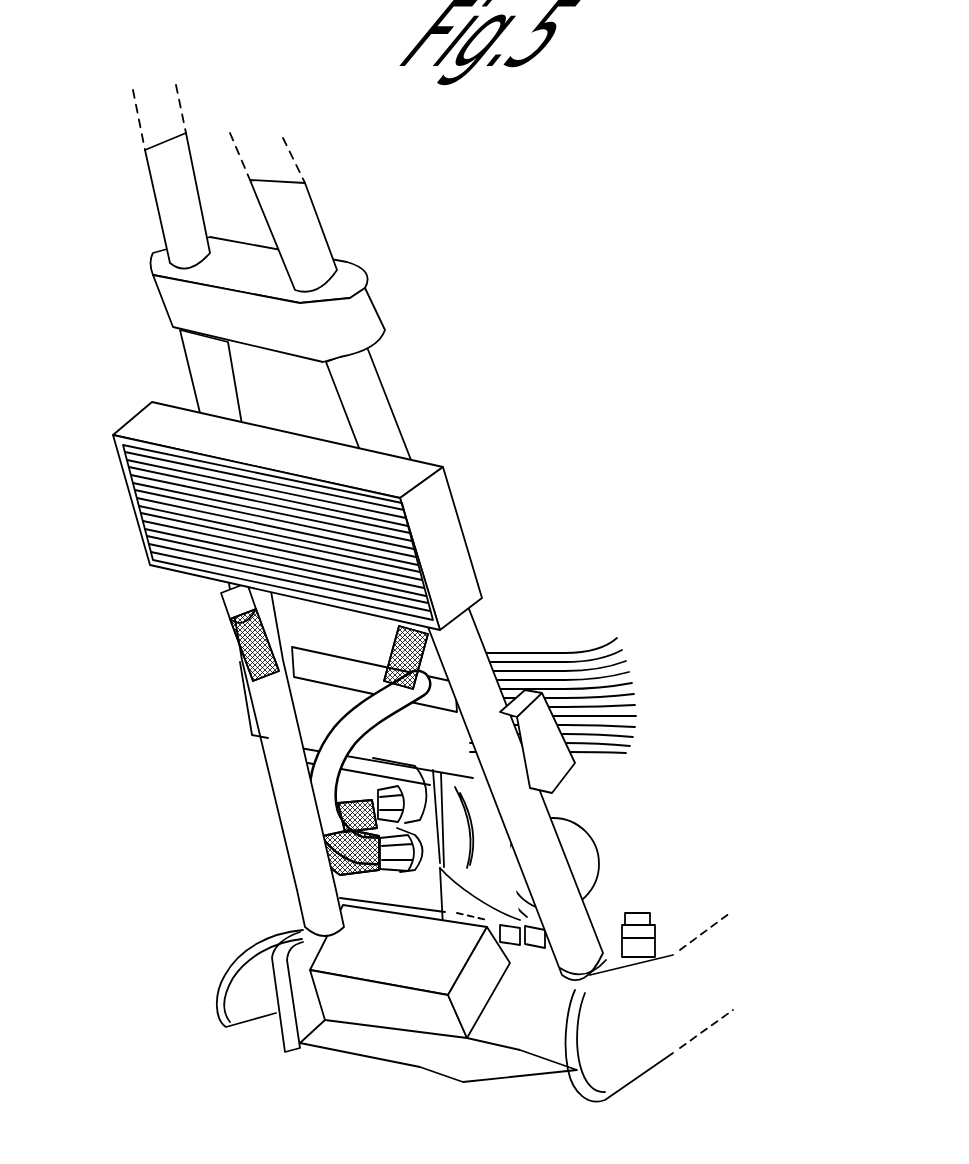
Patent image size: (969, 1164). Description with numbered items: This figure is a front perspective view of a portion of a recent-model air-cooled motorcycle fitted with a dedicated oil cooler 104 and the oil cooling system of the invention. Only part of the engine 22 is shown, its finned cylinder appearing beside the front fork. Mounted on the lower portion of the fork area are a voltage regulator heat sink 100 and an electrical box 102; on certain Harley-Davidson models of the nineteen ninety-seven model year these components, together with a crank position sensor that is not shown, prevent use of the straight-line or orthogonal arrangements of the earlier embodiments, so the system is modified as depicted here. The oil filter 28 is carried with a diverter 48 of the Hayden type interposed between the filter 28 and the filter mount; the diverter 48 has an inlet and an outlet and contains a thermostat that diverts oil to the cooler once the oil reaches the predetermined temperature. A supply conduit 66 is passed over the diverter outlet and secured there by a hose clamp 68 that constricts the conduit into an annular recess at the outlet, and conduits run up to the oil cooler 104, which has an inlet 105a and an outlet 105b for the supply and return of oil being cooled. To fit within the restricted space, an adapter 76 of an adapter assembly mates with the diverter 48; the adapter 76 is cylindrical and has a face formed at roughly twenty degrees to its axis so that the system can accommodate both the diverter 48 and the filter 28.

The engine 22 is at (623, 735).
The filter 28 is at (583, 853).
The diverter 48 is at (383, 883).
The supply conduit 66 is at (242, 645).
The hose clamp 68 is at (314, 830).
The adapter 76 is at (377, 1000).
The voltage regulator heat sink 100 is at (350, 1027).
The electrical box 102 is at (557, 762).
The oil cooler 104 is at (450, 540).
The inlet 105a is at (219, 594).
The outlet 105b is at (433, 643).